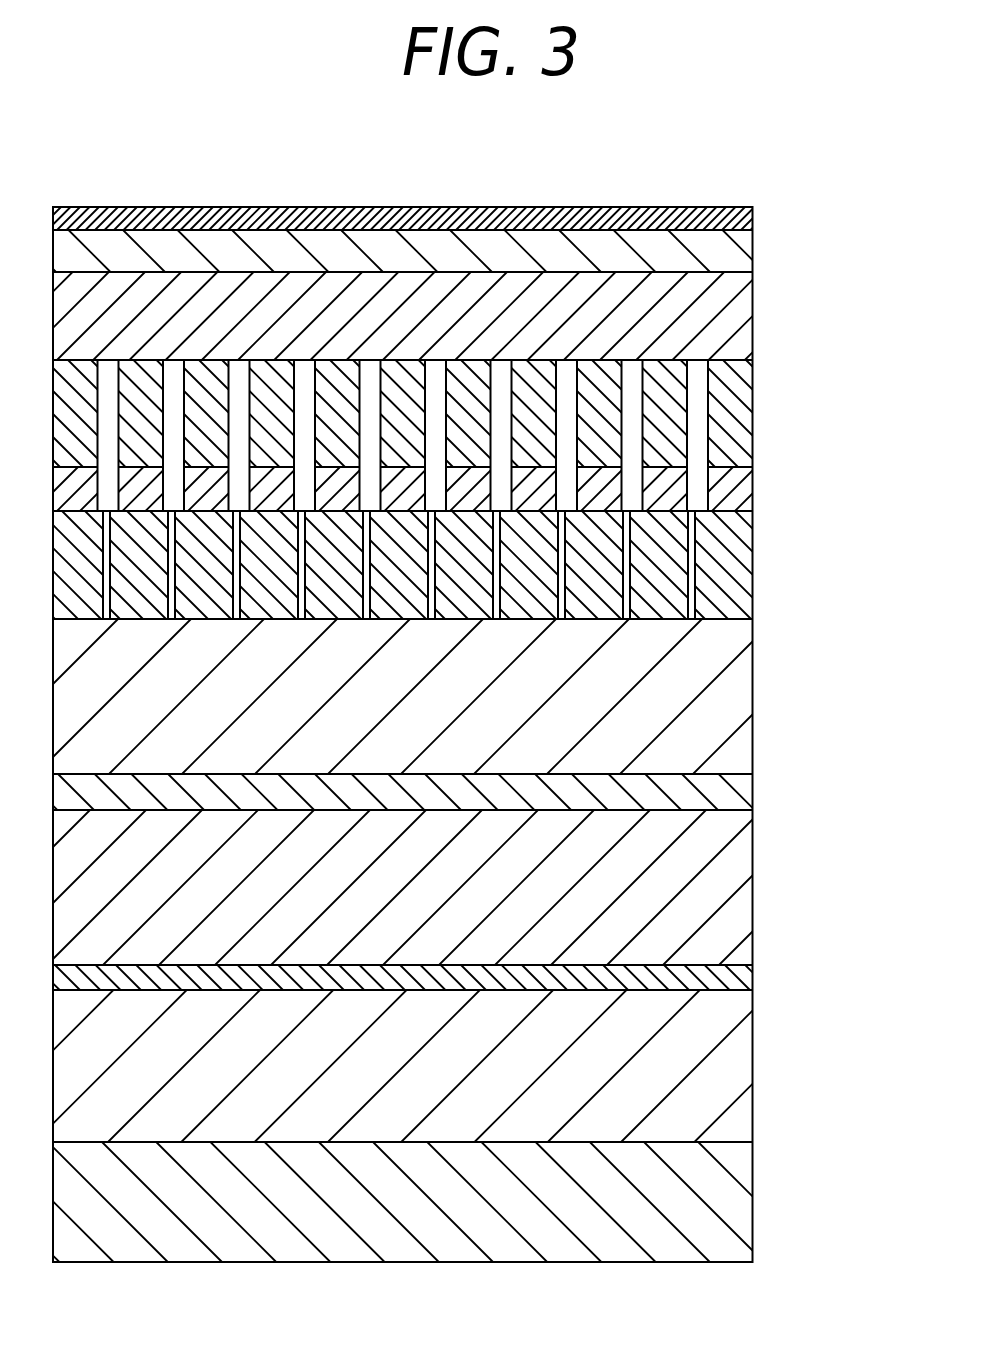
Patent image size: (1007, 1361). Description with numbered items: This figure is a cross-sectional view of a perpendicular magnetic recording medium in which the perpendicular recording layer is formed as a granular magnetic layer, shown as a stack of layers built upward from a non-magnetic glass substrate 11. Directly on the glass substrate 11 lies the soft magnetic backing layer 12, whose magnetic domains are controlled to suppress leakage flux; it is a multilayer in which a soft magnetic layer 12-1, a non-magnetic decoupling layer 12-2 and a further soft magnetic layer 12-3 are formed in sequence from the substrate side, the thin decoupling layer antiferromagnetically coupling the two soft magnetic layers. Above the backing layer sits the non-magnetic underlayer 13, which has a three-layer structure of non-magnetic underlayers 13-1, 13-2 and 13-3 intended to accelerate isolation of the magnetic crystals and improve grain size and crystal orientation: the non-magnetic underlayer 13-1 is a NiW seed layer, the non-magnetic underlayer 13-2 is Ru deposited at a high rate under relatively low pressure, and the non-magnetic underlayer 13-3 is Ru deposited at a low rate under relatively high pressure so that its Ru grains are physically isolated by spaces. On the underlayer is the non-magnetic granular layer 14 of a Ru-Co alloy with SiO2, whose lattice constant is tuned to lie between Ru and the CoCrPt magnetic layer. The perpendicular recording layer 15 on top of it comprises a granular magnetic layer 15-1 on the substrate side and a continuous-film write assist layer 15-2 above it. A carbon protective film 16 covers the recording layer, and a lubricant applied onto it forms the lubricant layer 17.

The glass substrate 11 is at (745, 1212).
The soft magnetic backing layer 12 is at (886, 815).
The soft magnetic layer 12-1 is at (745, 1060).
The non-magnetic decoupling layer 12-2 is at (745, 972).
The soft magnetic layer 12-3 is at (745, 892).
The non-magnetic underlayer 13 is at (886, 512).
The non-magnetic underlayer 13-1 is at (745, 790).
The non-magnetic underlayer 13-2 is at (745, 693).
The non-magnetic underlayer 13-3 is at (748, 563).
The non-magnetic granular layer 14 is at (748, 483).
The perpendicular recording layer 15 is at (886, 272).
The granular magnetic layer 15-1 is at (748, 400).
The write assist layer 15-2 is at (748, 306).
The protective film 16 is at (748, 248).
The lubricant layer 17 is at (748, 219).